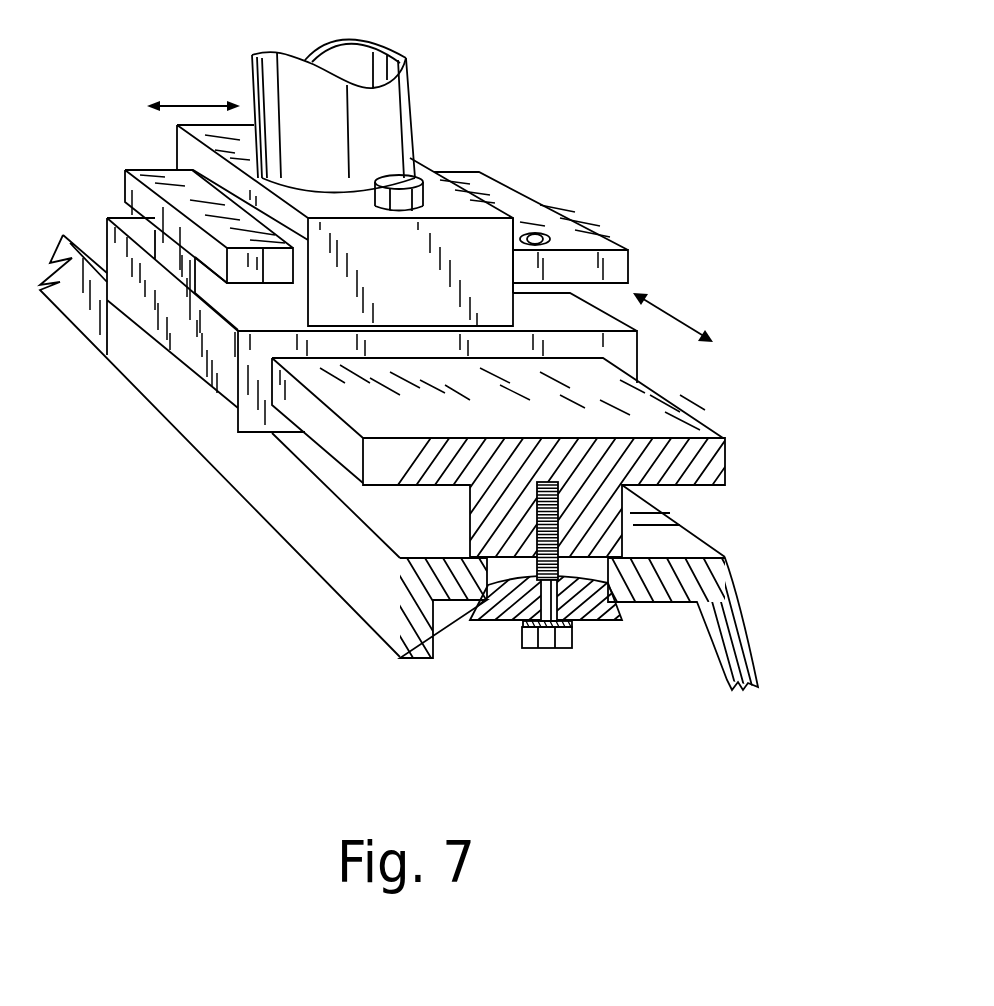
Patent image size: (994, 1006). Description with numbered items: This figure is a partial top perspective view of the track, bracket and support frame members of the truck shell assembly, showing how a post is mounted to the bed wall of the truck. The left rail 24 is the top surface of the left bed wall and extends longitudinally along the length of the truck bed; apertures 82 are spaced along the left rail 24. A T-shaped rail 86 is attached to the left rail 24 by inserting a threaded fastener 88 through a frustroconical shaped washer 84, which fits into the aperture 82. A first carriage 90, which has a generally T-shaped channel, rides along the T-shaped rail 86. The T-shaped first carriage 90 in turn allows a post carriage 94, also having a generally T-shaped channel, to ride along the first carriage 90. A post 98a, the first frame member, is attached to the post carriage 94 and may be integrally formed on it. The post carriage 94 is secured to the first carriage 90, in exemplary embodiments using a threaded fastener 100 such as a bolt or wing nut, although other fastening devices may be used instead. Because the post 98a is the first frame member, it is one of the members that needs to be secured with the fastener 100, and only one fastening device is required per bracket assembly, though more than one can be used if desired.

The left rail 24 is at (717, 577).
The aperture 82 is at (592, 570).
The frustroconical shaped washer 84 is at (497, 620).
The T-shaped rail 86 is at (717, 468).
The threaded fastener 88 is at (565, 645).
The first carriage 90 is at (637, 358).
The post carriage 94 is at (183, 153).
The post 98a is at (388, 118).
The threaded fastener 100 is at (423, 197).